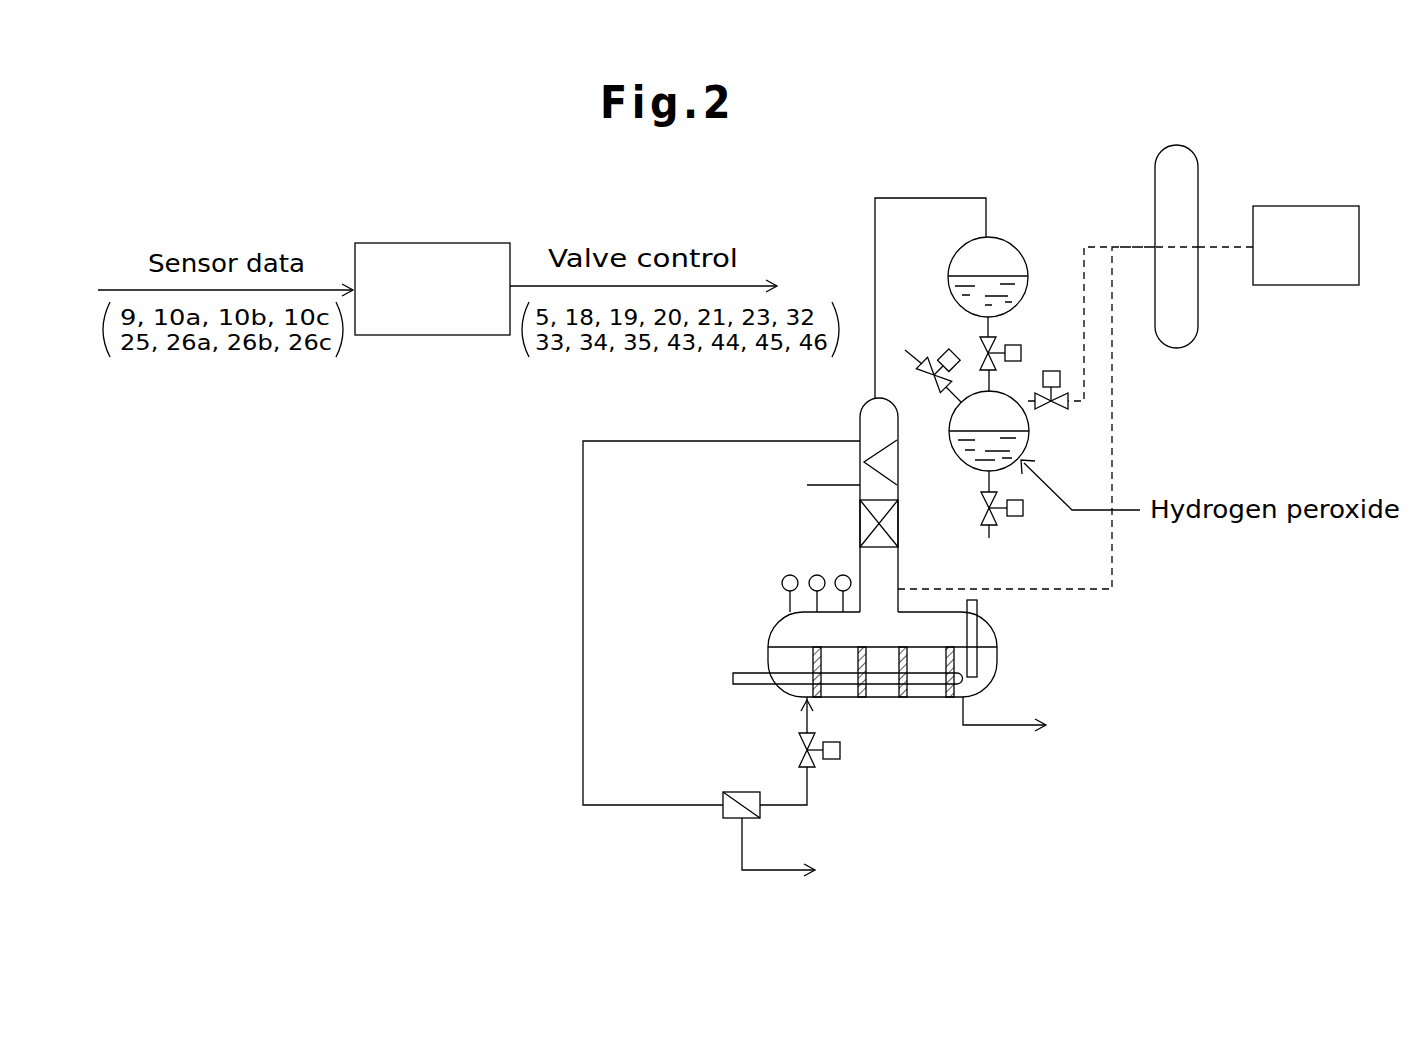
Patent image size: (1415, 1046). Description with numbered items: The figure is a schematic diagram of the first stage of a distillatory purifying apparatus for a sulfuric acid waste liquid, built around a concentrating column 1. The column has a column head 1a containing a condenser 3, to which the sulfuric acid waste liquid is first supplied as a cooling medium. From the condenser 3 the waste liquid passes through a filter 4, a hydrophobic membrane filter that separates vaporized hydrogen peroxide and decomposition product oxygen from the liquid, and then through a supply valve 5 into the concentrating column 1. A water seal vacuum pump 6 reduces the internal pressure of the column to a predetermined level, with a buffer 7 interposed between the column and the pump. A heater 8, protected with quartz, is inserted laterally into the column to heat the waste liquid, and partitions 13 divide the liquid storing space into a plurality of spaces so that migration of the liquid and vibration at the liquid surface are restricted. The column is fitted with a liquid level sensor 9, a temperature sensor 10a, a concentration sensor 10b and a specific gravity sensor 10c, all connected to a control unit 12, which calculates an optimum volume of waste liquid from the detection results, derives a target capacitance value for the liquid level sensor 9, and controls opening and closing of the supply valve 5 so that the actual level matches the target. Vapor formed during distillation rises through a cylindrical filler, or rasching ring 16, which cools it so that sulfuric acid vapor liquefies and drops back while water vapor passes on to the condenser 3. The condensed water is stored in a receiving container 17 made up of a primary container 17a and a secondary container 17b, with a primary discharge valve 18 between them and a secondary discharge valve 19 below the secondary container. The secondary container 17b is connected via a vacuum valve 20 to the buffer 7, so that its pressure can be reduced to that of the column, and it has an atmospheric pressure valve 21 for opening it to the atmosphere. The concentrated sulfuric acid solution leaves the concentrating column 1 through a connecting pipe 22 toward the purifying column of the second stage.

The concentrating column 1 is at (898, 566).
The column head 1a is at (860, 413).
The condenser 3 is at (880, 457).
The filter 4 is at (739, 792).
The supply valve 5 is at (799, 748).
The vacuum pump 6 is at (1360, 226).
The buffer 7 is at (1196, 152).
The heater 8 is at (737, 672).
The liquid level sensor 9 is at (977, 608).
The temperature sensor 10a is at (782, 583).
The concentration sensor 10b is at (815, 575).
The specific gravity sensor 10c is at (843, 575).
The control unit 12 is at (511, 244).
The partitions 13 is at (950, 697).
The cylindrical filler (rasching ring) 16 is at (898, 520).
The receiving container 17 is at (1028, 208).
The primary container 17a is at (1004, 242).
The secondary container 17b is at (1030, 428).
The primary discharge valve 18 is at (1012, 345).
The secondary discharge valve 19 is at (1023, 510).
The vacuum valve 20 is at (1050, 371).
The atmospheric pressure valve 21 is at (938, 352).
The connecting pipe 22 is at (1005, 724).